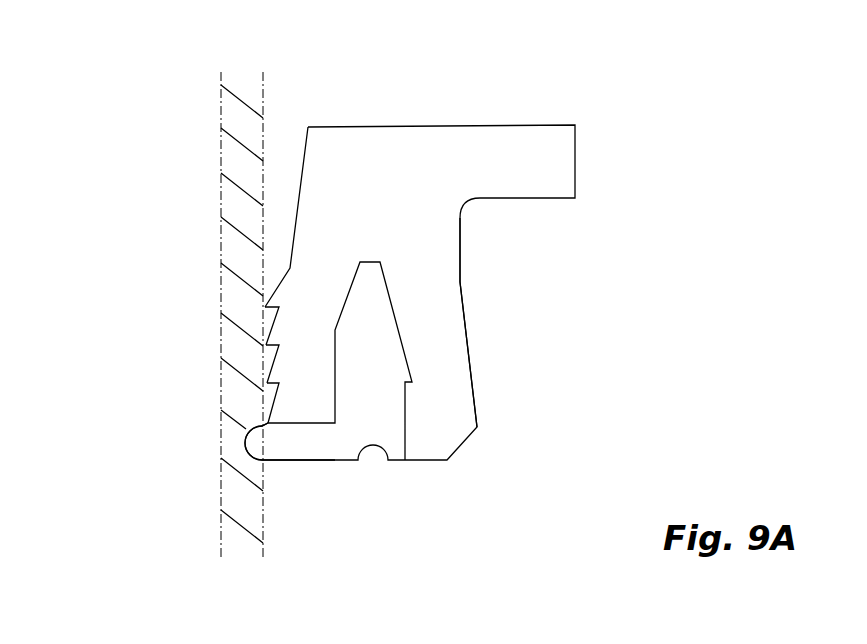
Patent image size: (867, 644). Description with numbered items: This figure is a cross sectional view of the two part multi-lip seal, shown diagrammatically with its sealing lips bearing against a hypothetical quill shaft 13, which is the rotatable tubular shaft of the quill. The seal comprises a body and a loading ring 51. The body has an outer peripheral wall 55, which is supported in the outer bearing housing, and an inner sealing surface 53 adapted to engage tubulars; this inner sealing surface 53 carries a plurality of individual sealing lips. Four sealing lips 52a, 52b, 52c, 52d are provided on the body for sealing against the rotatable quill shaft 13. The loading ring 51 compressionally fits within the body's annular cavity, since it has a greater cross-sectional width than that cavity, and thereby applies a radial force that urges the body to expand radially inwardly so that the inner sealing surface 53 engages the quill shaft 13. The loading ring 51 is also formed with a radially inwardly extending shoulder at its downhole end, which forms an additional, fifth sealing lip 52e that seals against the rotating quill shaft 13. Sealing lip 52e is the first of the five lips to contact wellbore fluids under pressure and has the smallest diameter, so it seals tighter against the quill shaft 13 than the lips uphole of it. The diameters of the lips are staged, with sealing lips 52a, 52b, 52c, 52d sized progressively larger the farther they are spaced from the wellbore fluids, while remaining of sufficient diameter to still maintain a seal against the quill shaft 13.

The tubular shaft 13 is at (240, 163).
The loading ring 51 is at (393, 187).
The inner sealing surface 53 is at (300, 185).
The outer peripheral wall 55 is at (460, 287).
The sealing lip 52a is at (262, 303).
The sealing lip 52b is at (262, 340).
The sealing lip 52c is at (262, 383).
The sealing lip 52d is at (250, 427).
The sealing lip 52e is at (250, 427).